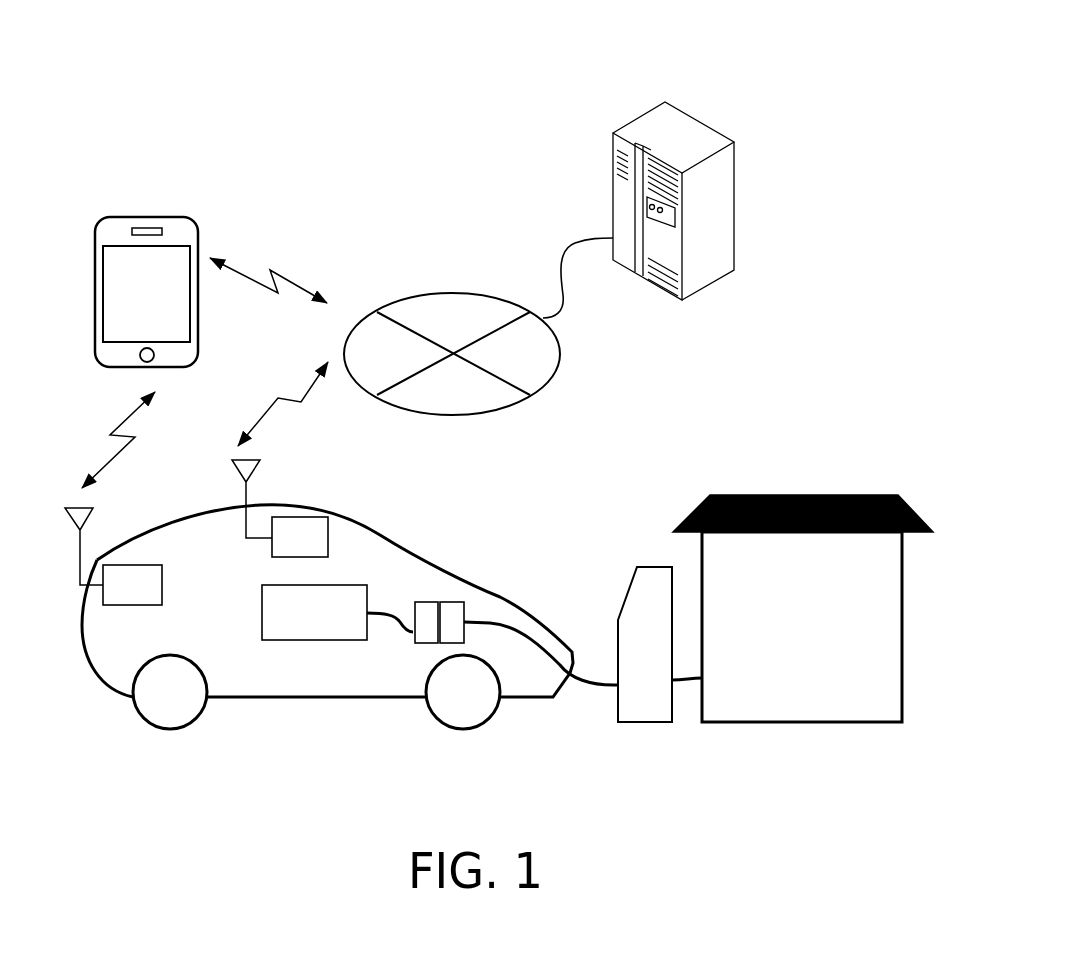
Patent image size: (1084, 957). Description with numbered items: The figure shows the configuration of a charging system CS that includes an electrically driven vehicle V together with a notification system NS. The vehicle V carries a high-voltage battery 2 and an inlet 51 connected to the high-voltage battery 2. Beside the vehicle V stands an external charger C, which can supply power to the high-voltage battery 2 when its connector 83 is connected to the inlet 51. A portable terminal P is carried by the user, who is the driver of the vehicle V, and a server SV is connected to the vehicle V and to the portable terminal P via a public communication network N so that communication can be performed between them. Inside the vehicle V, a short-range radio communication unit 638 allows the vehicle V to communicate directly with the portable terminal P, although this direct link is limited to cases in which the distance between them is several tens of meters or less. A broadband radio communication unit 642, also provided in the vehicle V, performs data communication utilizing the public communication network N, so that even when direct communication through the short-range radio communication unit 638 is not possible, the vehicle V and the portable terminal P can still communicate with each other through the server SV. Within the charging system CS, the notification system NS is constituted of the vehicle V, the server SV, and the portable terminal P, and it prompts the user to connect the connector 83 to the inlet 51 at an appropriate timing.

The notification system NS is at (310, 132).
The charging system CS is at (857, 41).
The server SV is at (705, 135).
The public communication network N is at (470, 295).
The portable terminal P is at (175, 217).
The electrically driven vehicle V is at (513, 608).
The short-range radio communication unit 638 is at (133, 578).
The broadband radio communication unit 642 is at (302, 518).
The high-voltage battery 2 is at (352, 593).
The inlet 51 is at (420, 610).
The connector 83 is at (455, 610).
The external charger C is at (650, 572).